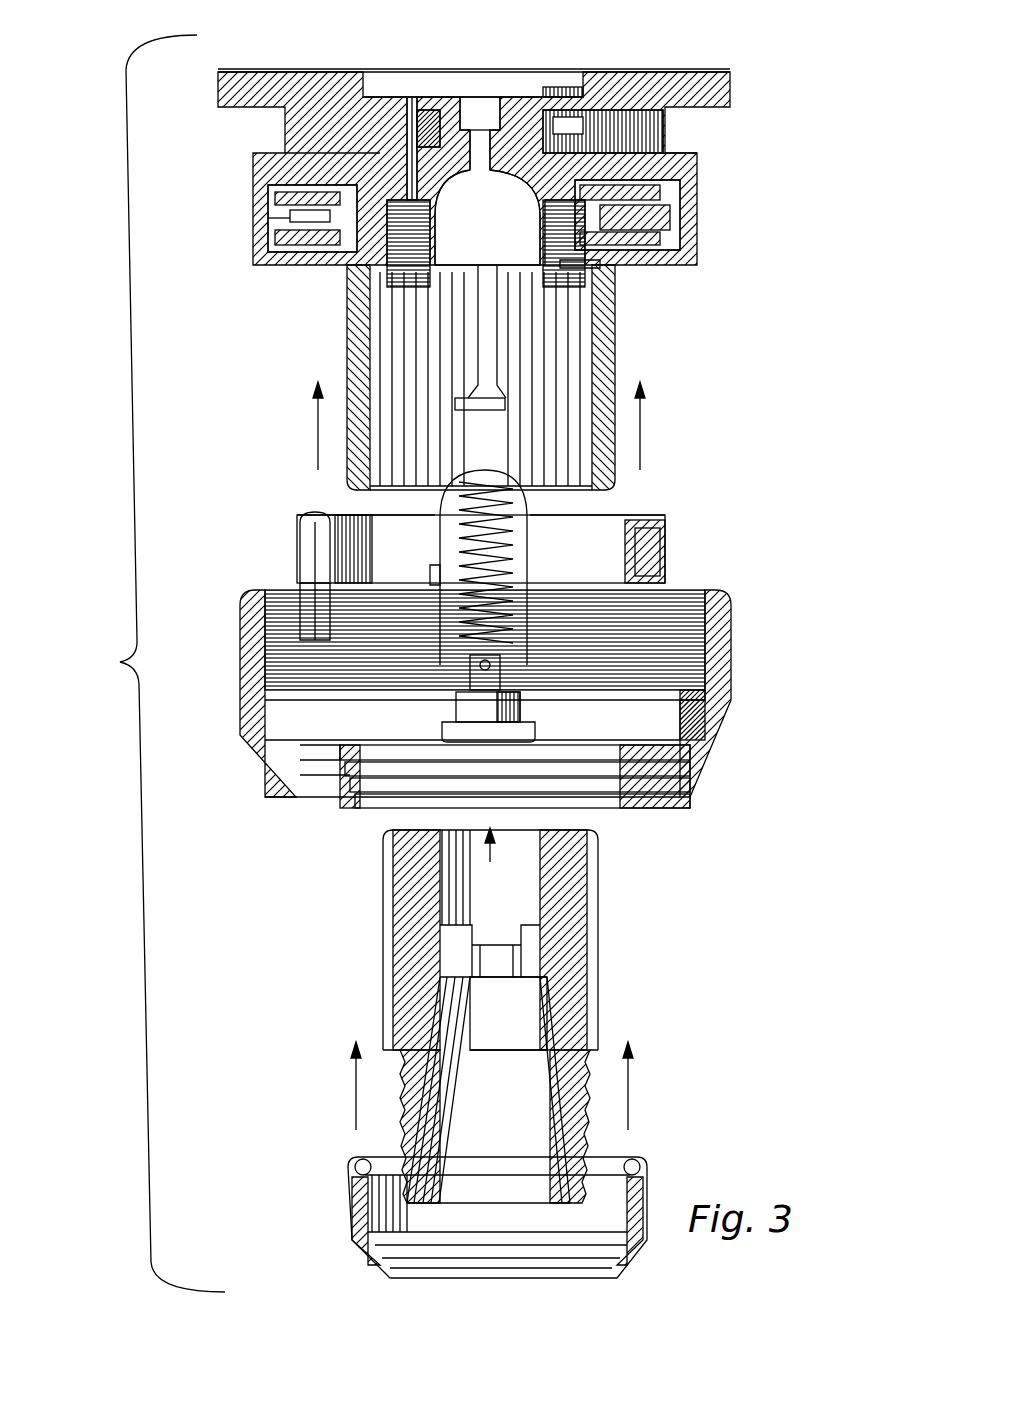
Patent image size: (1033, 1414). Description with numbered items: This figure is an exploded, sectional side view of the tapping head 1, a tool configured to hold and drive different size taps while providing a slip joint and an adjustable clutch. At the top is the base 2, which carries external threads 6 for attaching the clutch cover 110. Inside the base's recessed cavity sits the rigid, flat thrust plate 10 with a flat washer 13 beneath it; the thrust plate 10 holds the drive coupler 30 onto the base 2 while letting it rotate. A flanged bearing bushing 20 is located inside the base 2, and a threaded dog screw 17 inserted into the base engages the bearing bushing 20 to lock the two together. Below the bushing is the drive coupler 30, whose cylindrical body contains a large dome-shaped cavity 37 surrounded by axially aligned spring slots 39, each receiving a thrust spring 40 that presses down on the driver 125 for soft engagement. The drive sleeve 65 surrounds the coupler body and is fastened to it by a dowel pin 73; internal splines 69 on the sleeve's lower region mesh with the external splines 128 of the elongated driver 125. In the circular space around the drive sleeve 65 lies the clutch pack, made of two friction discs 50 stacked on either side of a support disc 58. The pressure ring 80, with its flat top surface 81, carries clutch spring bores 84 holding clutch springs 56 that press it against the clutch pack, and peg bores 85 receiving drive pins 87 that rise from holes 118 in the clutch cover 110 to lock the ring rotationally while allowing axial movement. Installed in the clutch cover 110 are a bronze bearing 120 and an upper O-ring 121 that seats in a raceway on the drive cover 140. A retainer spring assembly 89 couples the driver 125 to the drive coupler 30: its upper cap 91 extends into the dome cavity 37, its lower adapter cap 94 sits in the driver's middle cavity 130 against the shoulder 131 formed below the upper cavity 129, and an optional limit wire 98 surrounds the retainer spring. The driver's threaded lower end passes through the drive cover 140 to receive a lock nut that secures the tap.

The tapping head 1 is at (118, 662).
The base 2 is at (705, 71).
The external threads 6 is at (253, 215).
The thrust plate 10 is at (480, 84).
The flat washer 13 is at (553, 86).
The dog screw 17 is at (652, 130).
The bearing bushing 20 is at (414, 96).
The drive coupler 30 is at (512, 120).
The dome-shaped cavity 37 is at (493, 242).
The spring slots 39 is at (431, 110).
The thrust spring 40 is at (392, 268).
The friction discs 50 is at (660, 190).
The clutch spring 56 is at (666, 556).
The support disc 58 is at (665, 207).
The drive sleeve 65 is at (616, 340).
The internal splines 69 is at (540, 455).
The dowel pin 73 is at (600, 265).
The pressure ring 80 is at (668, 516).
The flat top surface 81 is at (300, 512).
The clutch spring bores 84 is at (666, 540).
The peg bores 85 is at (314, 546).
The drive pins 87 is at (325, 587).
The retainer spring assembly 89 is at (540, 504).
The upper cap 91 is at (478, 432).
The lower adapter cap 94 is at (472, 706).
The limit wire 98 is at (528, 540).
The clutch cover 110 is at (735, 656).
The holes 118 is at (330, 776).
The bronze bearing 120 is at (628, 766).
The upper O-ring 121 is at (630, 786).
The driver 125 is at (600, 905).
The external splines 128 is at (600, 845).
The upper cavity 129 is at (524, 904).
The middle cavity 130 is at (524, 1029).
The shoulder 131 is at (520, 982).
The drive cover 140 is at (350, 1185).